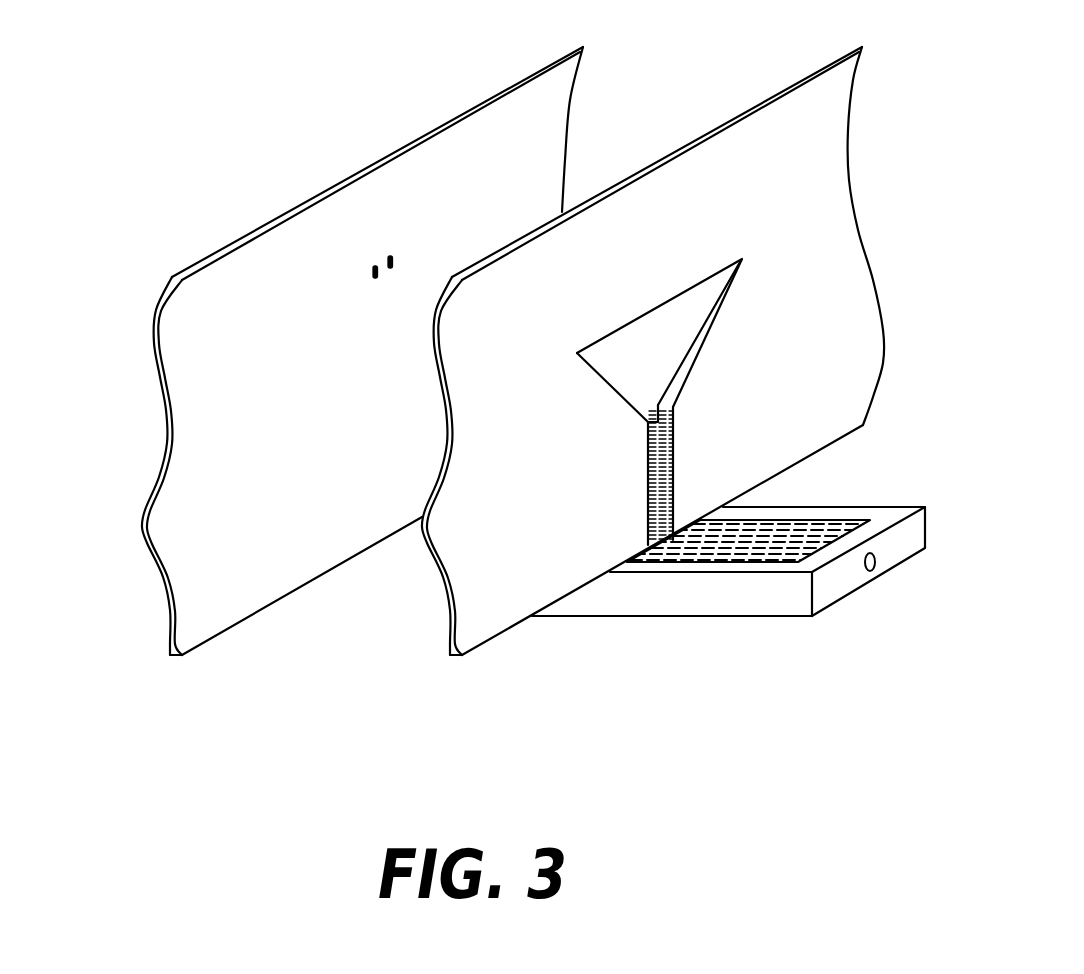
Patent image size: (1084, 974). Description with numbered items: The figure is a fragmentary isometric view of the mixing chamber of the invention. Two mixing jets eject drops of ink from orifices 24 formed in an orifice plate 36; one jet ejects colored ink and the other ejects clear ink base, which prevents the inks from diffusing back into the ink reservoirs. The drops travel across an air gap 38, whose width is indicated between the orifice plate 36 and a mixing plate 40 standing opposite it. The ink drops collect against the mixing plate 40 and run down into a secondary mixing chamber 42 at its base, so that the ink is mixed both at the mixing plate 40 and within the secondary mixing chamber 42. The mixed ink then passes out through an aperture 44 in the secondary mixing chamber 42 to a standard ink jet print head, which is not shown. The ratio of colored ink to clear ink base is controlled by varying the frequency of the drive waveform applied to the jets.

The orifice 24 is at (380, 252).
The orifice plate 36 is at (478, 107).
The air gap 38 is at (442, 658).
The mixing plate 40 is at (810, 73).
The secondary mixing chamber 42 is at (822, 503).
The aperture 44 is at (875, 562).